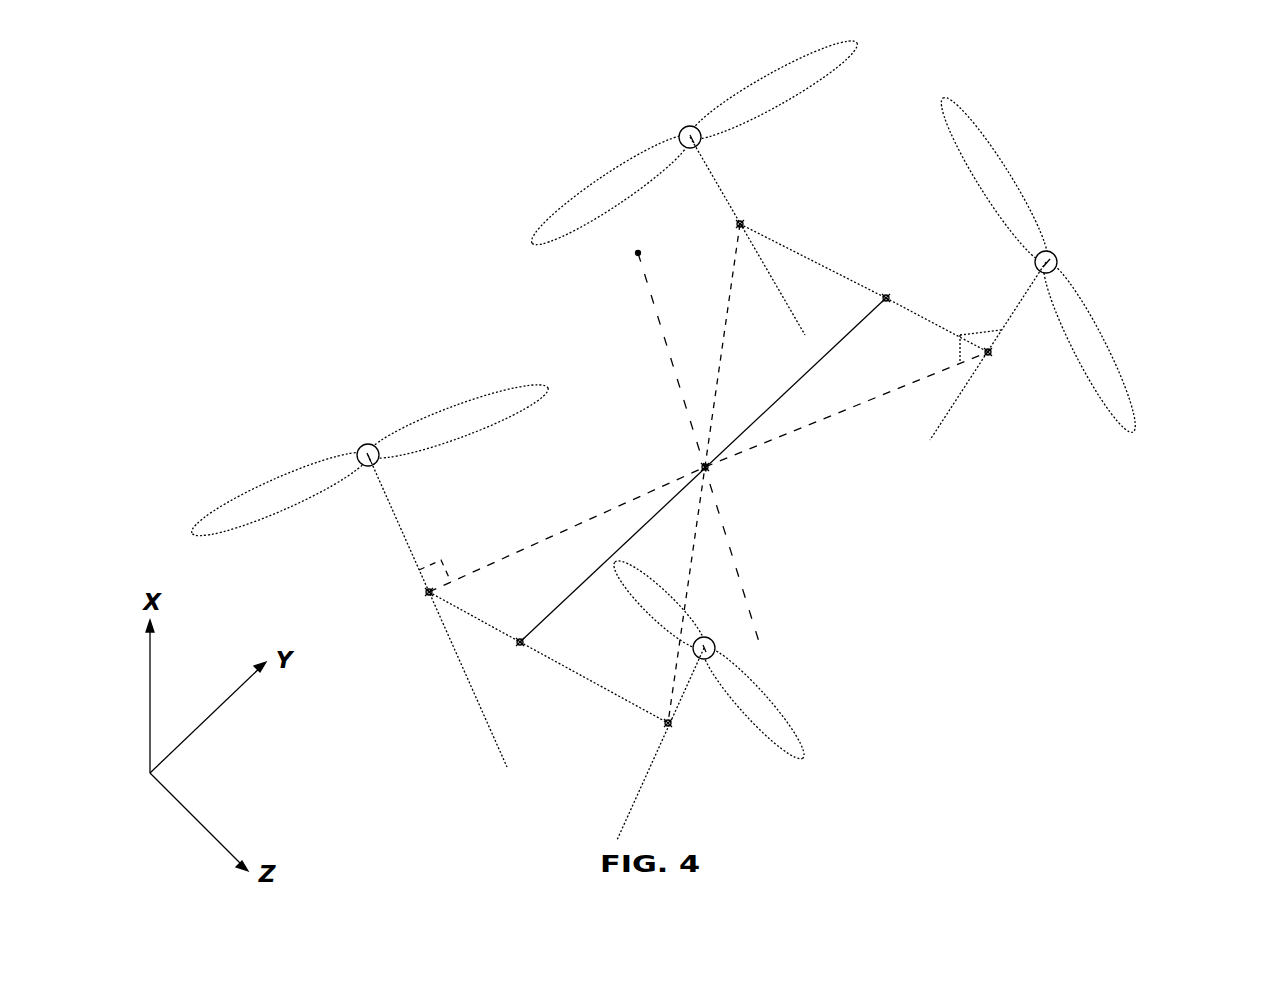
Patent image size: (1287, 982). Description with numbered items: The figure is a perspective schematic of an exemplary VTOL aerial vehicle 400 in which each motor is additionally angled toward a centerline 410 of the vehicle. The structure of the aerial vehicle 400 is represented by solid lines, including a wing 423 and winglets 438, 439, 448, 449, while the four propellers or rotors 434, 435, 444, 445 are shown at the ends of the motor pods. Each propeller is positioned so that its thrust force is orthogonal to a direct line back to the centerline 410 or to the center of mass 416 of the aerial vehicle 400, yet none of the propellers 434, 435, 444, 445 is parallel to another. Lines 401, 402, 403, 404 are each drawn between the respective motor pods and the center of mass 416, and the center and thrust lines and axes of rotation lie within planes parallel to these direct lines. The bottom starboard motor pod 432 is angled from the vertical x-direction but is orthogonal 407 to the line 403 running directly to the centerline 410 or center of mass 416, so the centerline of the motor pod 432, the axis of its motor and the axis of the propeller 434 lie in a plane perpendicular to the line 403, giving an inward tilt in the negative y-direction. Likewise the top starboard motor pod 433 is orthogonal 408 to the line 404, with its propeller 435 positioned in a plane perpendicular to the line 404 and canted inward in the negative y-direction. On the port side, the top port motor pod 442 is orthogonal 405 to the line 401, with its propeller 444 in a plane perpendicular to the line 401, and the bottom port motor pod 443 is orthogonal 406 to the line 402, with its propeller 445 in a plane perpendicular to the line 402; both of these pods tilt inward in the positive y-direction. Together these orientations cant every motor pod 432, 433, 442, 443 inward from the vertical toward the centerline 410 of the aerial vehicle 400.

The VTOL aerial vehicle 400 is at (1176, 137).
The line 401 is at (690, 578).
The line 402 is at (600, 513).
The line 403 is at (734, 269).
The line 404 is at (831, 417).
The orthogonal 405 is at (691, 672).
The orthogonal 406 is at (447, 562).
The orthogonal 407 is at (738, 223).
The orthogonal 408 is at (984, 331).
The centerline 410 is at (661, 333).
The center of mass 416 is at (637, 254).
The wing 423 is at (550, 612).
The bottom starboard motor pod 432 is at (727, 196).
The top starboard motor pod 433 is at (958, 401).
The propeller 434 is at (792, 69).
The propeller 435 is at (1103, 348).
The winglet 438 is at (851, 281).
The winglet 439 is at (919, 318).
The top port motor pod 442 is at (648, 772).
The bottom port motor pod 443 is at (413, 554).
The propeller 444 is at (760, 702).
The propeller 445 is at (262, 491).
The winglet 448 is at (572, 671).
The winglet 449 is at (495, 628).